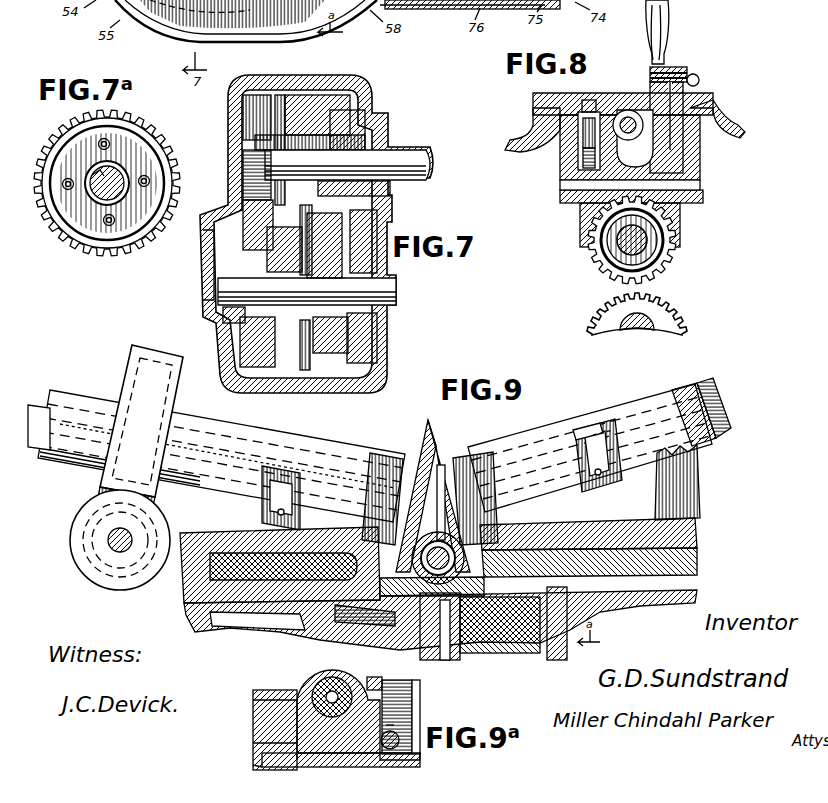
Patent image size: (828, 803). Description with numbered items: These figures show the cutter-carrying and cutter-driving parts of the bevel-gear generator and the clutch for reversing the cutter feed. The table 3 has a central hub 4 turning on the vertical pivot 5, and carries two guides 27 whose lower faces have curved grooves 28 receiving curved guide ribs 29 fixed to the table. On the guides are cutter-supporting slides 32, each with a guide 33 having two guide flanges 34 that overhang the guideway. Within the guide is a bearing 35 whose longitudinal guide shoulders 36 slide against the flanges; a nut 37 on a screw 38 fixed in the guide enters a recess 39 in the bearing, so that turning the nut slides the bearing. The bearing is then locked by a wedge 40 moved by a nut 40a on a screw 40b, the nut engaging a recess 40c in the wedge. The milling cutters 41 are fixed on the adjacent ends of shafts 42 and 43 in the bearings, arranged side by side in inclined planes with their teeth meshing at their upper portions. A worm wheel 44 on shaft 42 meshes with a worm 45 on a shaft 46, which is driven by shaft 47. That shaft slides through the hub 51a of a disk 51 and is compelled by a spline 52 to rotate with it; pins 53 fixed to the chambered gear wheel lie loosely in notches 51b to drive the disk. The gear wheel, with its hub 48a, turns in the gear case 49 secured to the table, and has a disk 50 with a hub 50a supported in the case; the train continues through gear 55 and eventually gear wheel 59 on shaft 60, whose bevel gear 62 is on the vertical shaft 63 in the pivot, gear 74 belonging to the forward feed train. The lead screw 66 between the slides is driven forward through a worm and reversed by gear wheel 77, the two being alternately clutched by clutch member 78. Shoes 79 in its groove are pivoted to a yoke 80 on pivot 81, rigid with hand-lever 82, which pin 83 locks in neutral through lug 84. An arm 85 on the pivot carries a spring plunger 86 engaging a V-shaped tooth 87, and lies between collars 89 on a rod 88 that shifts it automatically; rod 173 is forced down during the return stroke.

In FIG. 9, the table 3 is at (698, 592).
In FIG. 9, the central hub or bearing 4 is at (500, 645).
In FIG. 9, the vertical pivot 5 is at (470, 642).
In FIG. 9, the guides 27 is at (699, 550).
In FIG. 9, the grooves 28 is at (275, 616).
In FIG. 9, the curved guide ribs 29 is at (290, 636).
In FIG. 9, the cutter-supporting slides 32 is at (215, 530).
In FIG. 9A, the cutter-supporting slides 32 is at (262, 755).
In FIG. 9A, the guide 33 is at (260, 725).
In FIG. 9, the guide flanges 34 is at (670, 418).
In FIG. 9A, the guide flanges 34 is at (288, 690).
In FIG. 9, the bearing 35 is at (280, 432).
In FIG. 9A, the bearing 35 is at (262, 740).
In FIG. 9, the longitudinal guide shoulders 36 is at (722, 430).
In FIG. 9A, the longitudinal guide shoulders 36 is at (412, 698).
In FIG. 9, the nut 37 is at (585, 428).
In FIG. 9A, the nut 37 is at (372, 677).
In FIG. 9, the screw 38 is at (425, 662).
In FIG. 9A, the screw 38 is at (422, 711).
In FIG. 9, the recess 39 is at (612, 462).
In FIG. 9A, the recess 39 is at (398, 733).
In FIG. 9, the wedge 40 is at (692, 475).
In FIG. 9A, the wedge 40 is at (255, 765).
In FIG. 9, the nut 40a is at (572, 482).
In FIG. 9A, the nut 40a is at (422, 755).
In FIG. 9, the screw 40b is at (620, 480).
In FIG. 9A, the recess 40c is at (445, 708).
In FIG. 9, the milling cutters 41 is at (420, 445).
In FIG. 9, the shaft 42 is at (326, 450).
In FIG. 9, the shaft 43 is at (612, 425).
In FIG. 9, the worm wheel 44 is at (156, 348).
In FIG. 9, the worm 45 is at (82, 575).
In FIG. 7, the shaft 46 is at (320, 110).
In FIG. 9, the shaft 46 is at (115, 555).
In FIG. 7A, the shaft 47 is at (127, 192).
In FIG. 7, the shaft 47 is at (428, 156).
In FIG. 7, the hub 48a is at (265, 152).
In FIG. 7, the gear case 49 is at (242, 82).
In FIG. 7, the disk 50 is at (362, 105).
In FIG. 7, the hub 50a is at (378, 128).
In FIG. 7A, the disk 51 is at (90, 212).
In FIG. 7A, the hub 51a is at (124, 170).
In FIG. 7, the hub 51a is at (392, 142).
In FIG. 7A, the notches 51b is at (150, 180).
In FIG. 7A, the spline 52 is at (92, 188).
In FIG. 7A, the pins 53 is at (62, 160).
In FIG. 7, the gear 55 is at (206, 248).
In FIG. 8, the gear wheel 59 is at (688, 324).
In FIG. 8, the shaft 60 is at (640, 330).
In FIG. 9, the bevel gear 62 is at (365, 621).
In FIG. 9, the vertical shaft 63 is at (462, 655).
In FIG. 8, the lead screw 66 is at (601, 228).
In FIG. 9, the lead screw 66 is at (436, 502).
In FIG. 9, the gear 74 is at (436, 533).
In FIG. 8, the gear wheel 77 is at (676, 270).
In FIG. 8, the clutch member 78 is at (622, 256).
In FIG. 8, the shoes 79 is at (664, 256).
In FIG. 8, the yoke 80 is at (686, 212).
In FIG. 8, the pivot 81 is at (700, 184).
In FIG. 8, the hand-lever 82 is at (668, 50).
In FIG. 8, the pin 83 is at (700, 78).
In FIG. 8, the lug 84 is at (683, 70).
In FIG. 8, the arm 85 is at (578, 142).
In FIG. 8, the spring plunger 86 is at (588, 160).
In FIG. 8, the V-shaped tooth 87 is at (603, 110).
In FIG. 8, the rod 88 is at (630, 134).
In FIG. 8, the collars 89 is at (655, 130).
In FIG. 9, the rod 173 is at (446, 662).